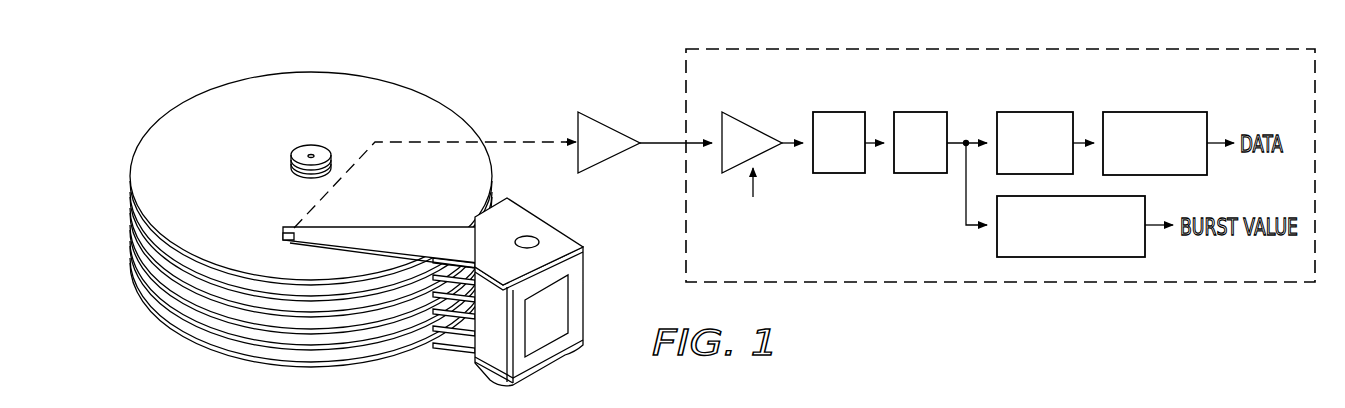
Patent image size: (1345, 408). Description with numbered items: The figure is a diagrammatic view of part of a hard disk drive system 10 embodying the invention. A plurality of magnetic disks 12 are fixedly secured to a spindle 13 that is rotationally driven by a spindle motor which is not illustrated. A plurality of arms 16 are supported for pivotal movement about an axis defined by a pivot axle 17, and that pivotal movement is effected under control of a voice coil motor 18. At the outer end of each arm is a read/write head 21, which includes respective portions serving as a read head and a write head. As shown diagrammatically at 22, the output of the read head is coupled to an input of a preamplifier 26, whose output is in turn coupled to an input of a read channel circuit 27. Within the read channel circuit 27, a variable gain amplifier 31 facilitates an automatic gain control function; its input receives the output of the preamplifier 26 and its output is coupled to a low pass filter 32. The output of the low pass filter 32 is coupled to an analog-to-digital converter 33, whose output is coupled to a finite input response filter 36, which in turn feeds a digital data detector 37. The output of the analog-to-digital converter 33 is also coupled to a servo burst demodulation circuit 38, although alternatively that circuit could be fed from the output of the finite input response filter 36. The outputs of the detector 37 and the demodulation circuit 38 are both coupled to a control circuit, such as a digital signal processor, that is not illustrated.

The hard disk drive system 10 is at (645, 68).
The magnetic disks 12 is at (180, 118).
The spindle 13 is at (305, 148).
The arms 16 is at (400, 227).
The pivot axle 17 is at (530, 237).
The voice coil motor 18 is at (558, 235).
The read/write head 21 is at (283, 237).
The read head output coupling 22 is at (530, 140).
The preamplifier 26 is at (610, 162).
The read channel circuit 27 is at (894, 263).
The variable gain amplifier 31 is at (770, 160).
The low pass filter 32 is at (838, 111).
The analog-to-digital converter 33 is at (920, 111).
The finite input response filter 36 is at (1030, 111).
The digital data detector 37 is at (1155, 111).
The servo burst demodulation circuit 38 is at (1147, 240).